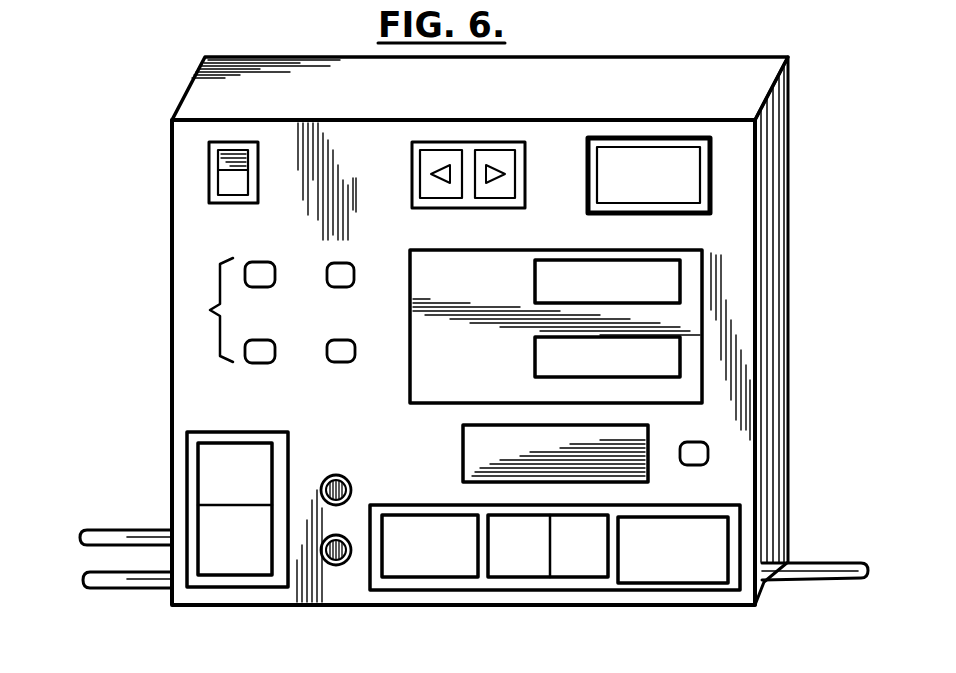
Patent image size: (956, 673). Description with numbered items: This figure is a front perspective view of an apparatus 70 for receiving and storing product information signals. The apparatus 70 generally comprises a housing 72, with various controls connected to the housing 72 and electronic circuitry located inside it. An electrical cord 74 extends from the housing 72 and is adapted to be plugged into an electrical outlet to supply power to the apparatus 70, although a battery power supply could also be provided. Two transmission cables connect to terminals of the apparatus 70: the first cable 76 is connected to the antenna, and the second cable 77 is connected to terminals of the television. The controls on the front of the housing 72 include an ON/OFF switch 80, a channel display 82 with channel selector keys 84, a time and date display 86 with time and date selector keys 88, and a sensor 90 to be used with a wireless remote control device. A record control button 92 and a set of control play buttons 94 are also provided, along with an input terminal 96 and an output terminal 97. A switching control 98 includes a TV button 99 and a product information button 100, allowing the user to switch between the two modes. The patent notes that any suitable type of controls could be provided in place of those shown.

The apparatus for receiving and storing product information signals 70 is at (114, 104).
The housing 72 is at (198, 68).
The electrical cord 74 is at (822, 582).
The first cable 76 is at (108, 592).
The second cable 77 is at (100, 528).
The ON/OFF switch 80 is at (208, 170).
The channel display 82 is at (655, 140).
The channel selector keys 84 is at (482, 140).
The time and date display 86 is at (703, 302).
The time and date selector keys 88 is at (212, 310).
The sensor 90 is at (463, 448).
The record control button 92 is at (710, 447).
The control play buttons 94 is at (597, 592).
The input terminal 96 is at (337, 565).
The output terminal 97 is at (338, 474).
The switching control 98 is at (202, 586).
The TV button 99 is at (215, 468).
The product information button 100 is at (237, 566).